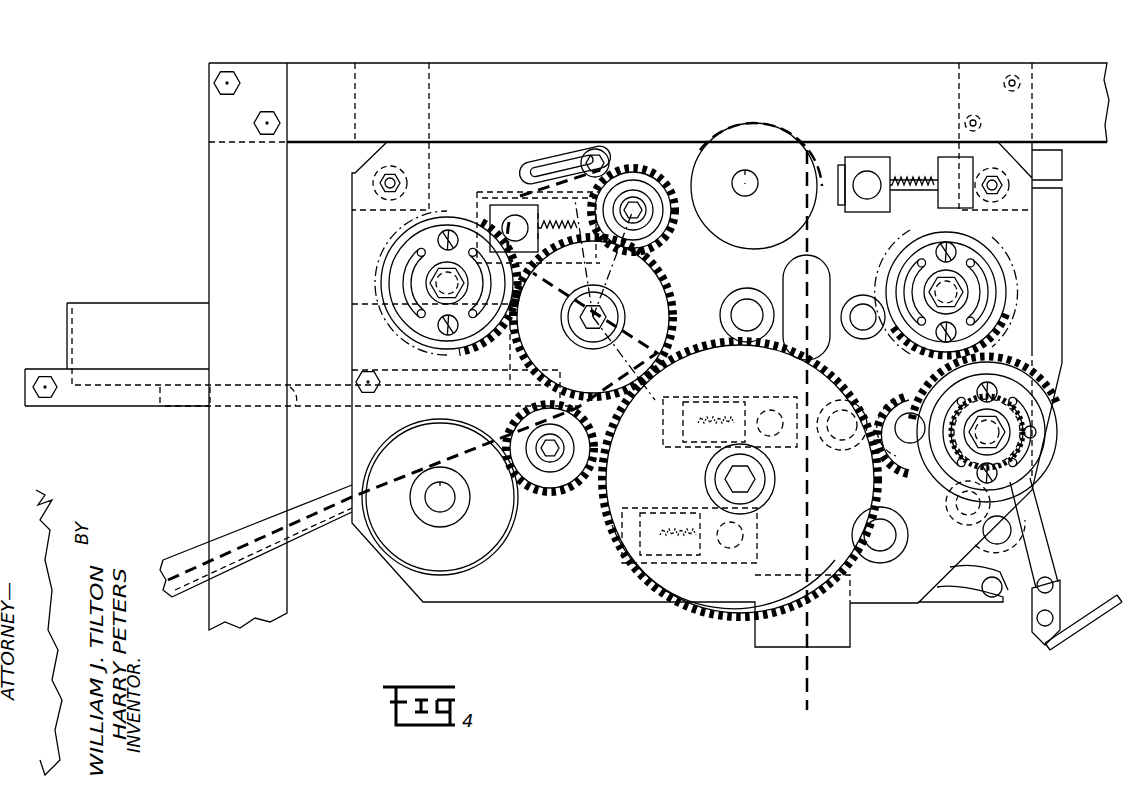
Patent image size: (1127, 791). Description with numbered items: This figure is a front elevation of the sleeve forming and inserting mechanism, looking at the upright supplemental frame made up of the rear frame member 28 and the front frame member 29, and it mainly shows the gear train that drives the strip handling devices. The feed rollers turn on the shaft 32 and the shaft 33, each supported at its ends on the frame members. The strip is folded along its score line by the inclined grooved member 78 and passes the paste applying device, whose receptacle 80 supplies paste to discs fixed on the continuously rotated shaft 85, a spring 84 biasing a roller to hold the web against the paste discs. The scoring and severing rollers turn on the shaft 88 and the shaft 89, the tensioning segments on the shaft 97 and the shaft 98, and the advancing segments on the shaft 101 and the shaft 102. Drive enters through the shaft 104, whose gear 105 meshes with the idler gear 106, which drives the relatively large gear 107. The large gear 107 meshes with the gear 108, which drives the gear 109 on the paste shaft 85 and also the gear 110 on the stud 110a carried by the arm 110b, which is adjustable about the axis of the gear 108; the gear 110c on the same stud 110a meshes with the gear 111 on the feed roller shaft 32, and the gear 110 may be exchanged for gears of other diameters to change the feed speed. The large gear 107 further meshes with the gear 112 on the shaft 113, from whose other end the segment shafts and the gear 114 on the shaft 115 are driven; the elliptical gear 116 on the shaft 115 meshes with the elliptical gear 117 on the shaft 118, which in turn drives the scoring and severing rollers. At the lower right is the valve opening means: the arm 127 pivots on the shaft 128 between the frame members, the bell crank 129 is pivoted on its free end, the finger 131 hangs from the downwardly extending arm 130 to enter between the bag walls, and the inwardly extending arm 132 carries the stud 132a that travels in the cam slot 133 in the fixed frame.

The rear frame member 28 is at (882, 73).
The front frame member 29 is at (890, 603).
The shaft 32 is at (752, 183).
The shaft 33 is at (867, 177).
The member 78 is at (305, 525).
The receptacle 80 is at (133, 308).
The spring 84 is at (538, 227).
The shaft 85 is at (440, 292).
The shaft 88 is at (748, 308).
The shaft 89 is at (863, 305).
The shaft 97 is at (770, 402).
The shaft 98 is at (842, 450).
The shaft 101 is at (757, 540).
The shaft 102 is at (880, 552).
The shaft 104 is at (450, 498).
The gear 105 is at (490, 537).
The idler gear 106 is at (548, 490).
The gear 107 is at (612, 505).
The gear 108 is at (658, 316).
The gear 109 is at (430, 300).
The gear 110 is at (640, 250).
The stud 110a is at (650, 209).
The arm 110b is at (623, 128).
The gear 110c is at (637, 178).
The gear 111 is at (768, 138).
The gear 112 is at (908, 462).
The shaft 113 is at (905, 412).
The gear 114 is at (1045, 449).
The shaft 115 is at (1000, 432).
The elliptical gear 116 is at (1018, 372).
The elliptical gear 117 is at (1010, 303).
The shaft 118 is at (950, 300).
The arm 127 is at (1035, 556).
The shaft 128 is at (963, 520).
The bell crank 129 is at (1055, 585).
The arm 130 is at (1054, 610).
The finger 131 is at (1085, 612).
The arm 132 is at (1015, 612).
The stud 132a is at (982, 590).
The cam slot 133 is at (940, 606).